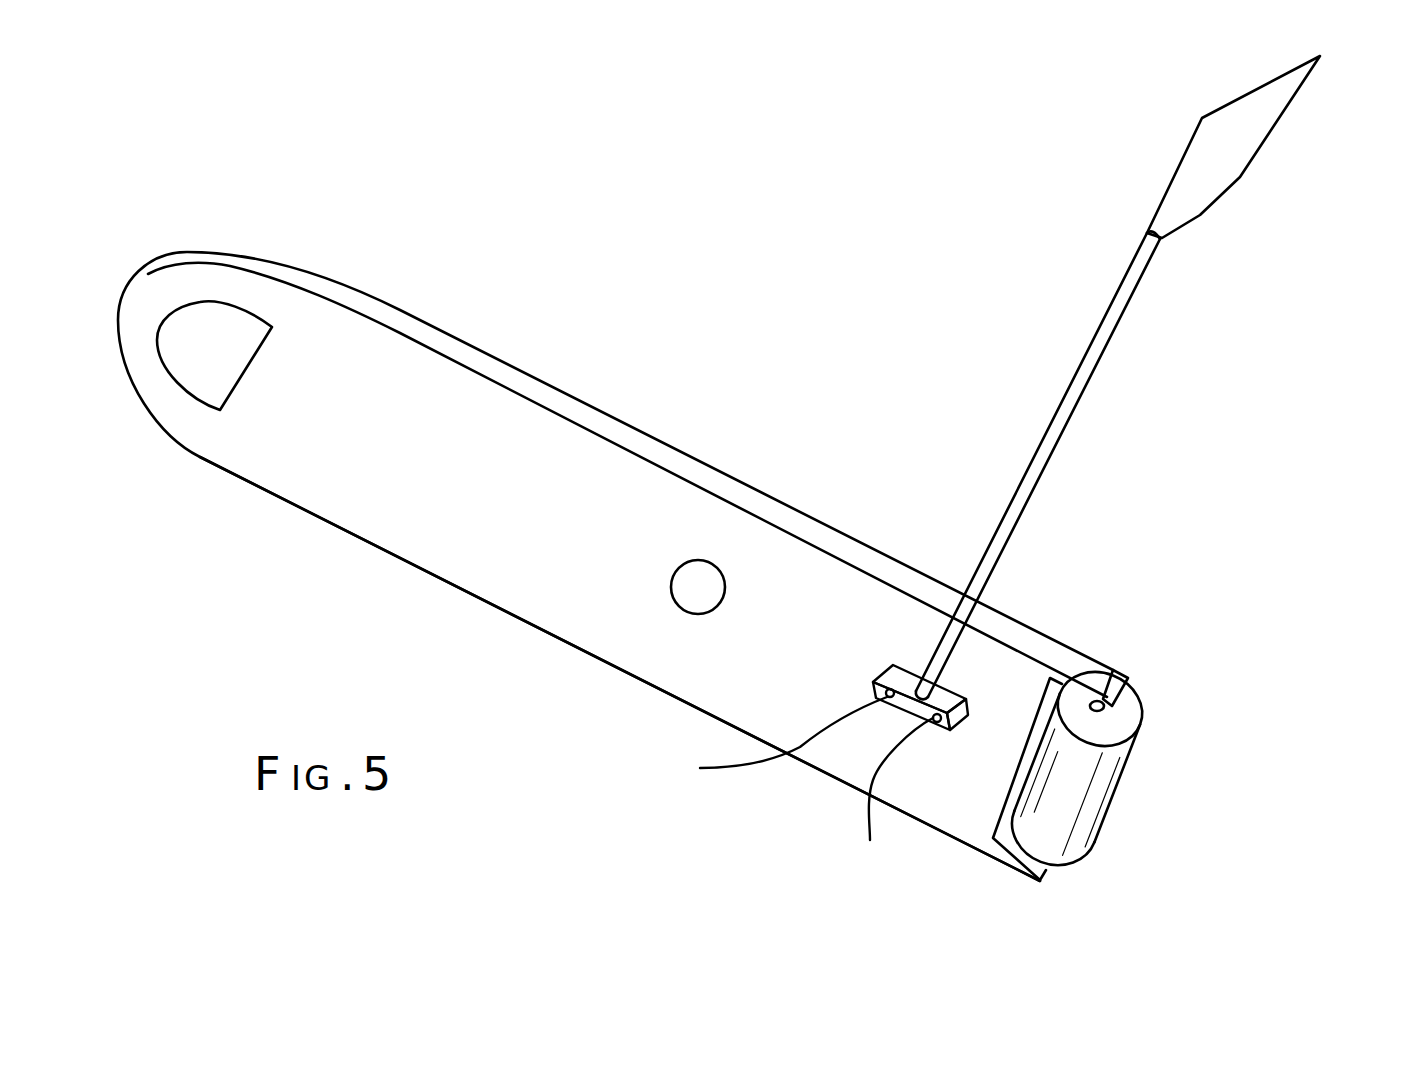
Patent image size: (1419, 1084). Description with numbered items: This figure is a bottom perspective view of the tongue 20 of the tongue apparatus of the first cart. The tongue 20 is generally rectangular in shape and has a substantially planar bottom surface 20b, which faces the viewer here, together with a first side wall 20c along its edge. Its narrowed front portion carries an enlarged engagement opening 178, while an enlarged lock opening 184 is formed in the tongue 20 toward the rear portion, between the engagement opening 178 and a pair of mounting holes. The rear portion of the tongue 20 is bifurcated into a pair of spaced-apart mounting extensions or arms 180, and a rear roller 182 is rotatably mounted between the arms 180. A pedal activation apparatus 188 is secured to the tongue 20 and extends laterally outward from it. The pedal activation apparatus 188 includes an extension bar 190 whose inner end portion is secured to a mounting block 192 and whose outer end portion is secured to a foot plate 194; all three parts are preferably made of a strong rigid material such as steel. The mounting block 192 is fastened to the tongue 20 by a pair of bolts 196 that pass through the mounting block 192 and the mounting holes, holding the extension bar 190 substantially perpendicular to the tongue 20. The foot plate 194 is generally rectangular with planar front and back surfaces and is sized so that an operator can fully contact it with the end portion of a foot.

The tongue 20 is at (606, 375).
The bottom surface 20b is at (397, 479).
The first side wall 20c is at (412, 328).
The engagement opening 178 is at (200, 333).
The mounting extensions or arms 180 is at (1072, 660).
The rear roller 182 is at (1078, 795).
The lock opening 184 is at (697, 582).
The pedal activation apparatus 188 is at (1021, 464).
The extension bar 190 is at (1038, 470).
The mounting block 192 is at (910, 708).
The foot plate 194 is at (1230, 145).
The bolts 196 is at (790, 785).